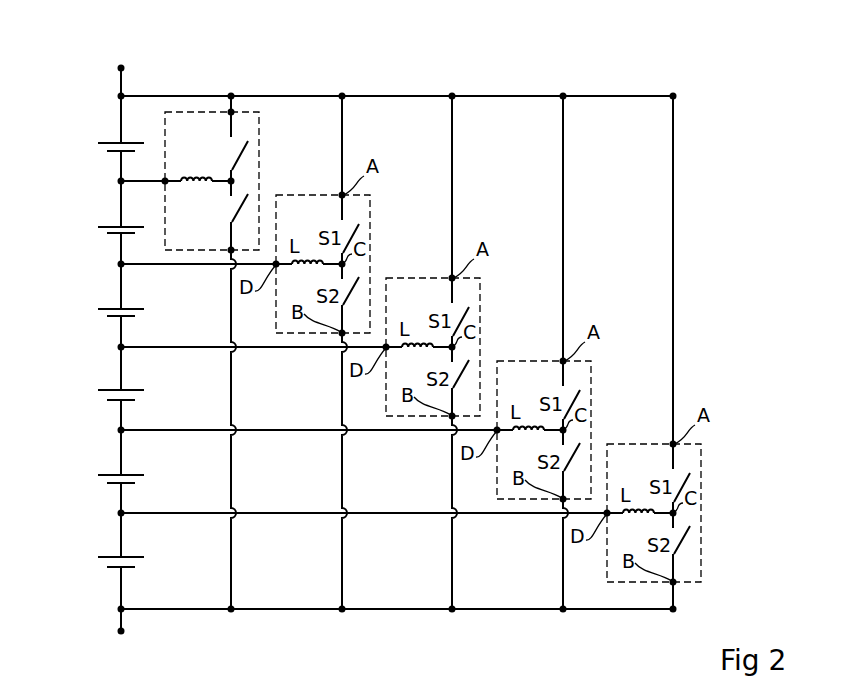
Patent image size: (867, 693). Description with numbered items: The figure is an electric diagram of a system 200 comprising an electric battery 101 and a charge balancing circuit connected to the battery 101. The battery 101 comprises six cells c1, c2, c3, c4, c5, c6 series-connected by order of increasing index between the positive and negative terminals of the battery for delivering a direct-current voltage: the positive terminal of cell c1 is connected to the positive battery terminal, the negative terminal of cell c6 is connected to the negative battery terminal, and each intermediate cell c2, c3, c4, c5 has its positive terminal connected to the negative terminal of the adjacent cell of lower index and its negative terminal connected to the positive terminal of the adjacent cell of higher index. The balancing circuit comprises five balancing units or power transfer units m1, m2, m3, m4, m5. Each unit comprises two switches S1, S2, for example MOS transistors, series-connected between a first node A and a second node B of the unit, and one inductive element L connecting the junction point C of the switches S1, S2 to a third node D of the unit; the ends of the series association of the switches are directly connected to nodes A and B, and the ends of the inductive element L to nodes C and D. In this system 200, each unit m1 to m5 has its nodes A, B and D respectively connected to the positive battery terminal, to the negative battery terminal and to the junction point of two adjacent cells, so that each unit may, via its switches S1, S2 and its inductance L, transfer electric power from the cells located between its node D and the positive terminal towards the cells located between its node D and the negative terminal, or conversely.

The system 200 is at (635, 56).
The electric battery 101 is at (119, 82).
The cell c1 is at (106, 147).
The cell c2 is at (106, 231).
The cell c3 is at (106, 313).
The cell c4 is at (106, 395).
The cell c5 is at (106, 479).
The cell c6 is at (106, 561).
The balancing unit m1 is at (217, 163).
The balancing unit m2 is at (328, 246).
The balancing unit m3 is at (438, 329).
The balancing unit m4 is at (550, 412).
The balancing unit m5 is at (659, 495).
The inductive element L is at (198, 166).
The switch S1 is at (227, 146).
The switch S2 is at (226, 215).
The first node A is at (248, 94).
The second node B is at (207, 236).
The junction point C is at (242, 170).
The third node D is at (148, 197).